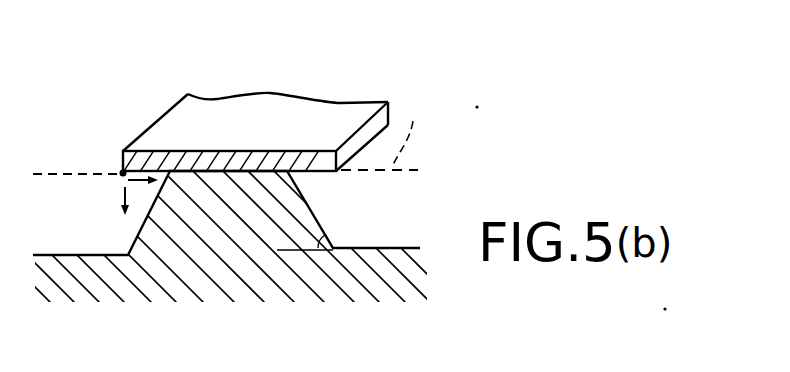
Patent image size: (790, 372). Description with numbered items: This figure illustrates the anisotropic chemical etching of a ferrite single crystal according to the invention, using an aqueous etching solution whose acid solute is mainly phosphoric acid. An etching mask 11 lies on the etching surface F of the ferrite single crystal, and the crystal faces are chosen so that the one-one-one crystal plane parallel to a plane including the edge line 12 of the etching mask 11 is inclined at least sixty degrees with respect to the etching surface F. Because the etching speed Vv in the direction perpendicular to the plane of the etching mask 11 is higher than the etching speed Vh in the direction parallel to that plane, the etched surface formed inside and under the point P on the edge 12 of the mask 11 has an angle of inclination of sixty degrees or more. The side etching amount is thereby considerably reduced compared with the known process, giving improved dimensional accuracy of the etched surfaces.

The etching mask 11 is at (281, 106).
The edge line of etching mask 12 is at (153, 123).
The point on the mask edge P is at (113, 160).
The etching surface F is at (408, 132).
The etching speed perpendicular to the mask plane Vv is at (106, 204).
The etching speed parallel to the mask plane Vh is at (150, 199).